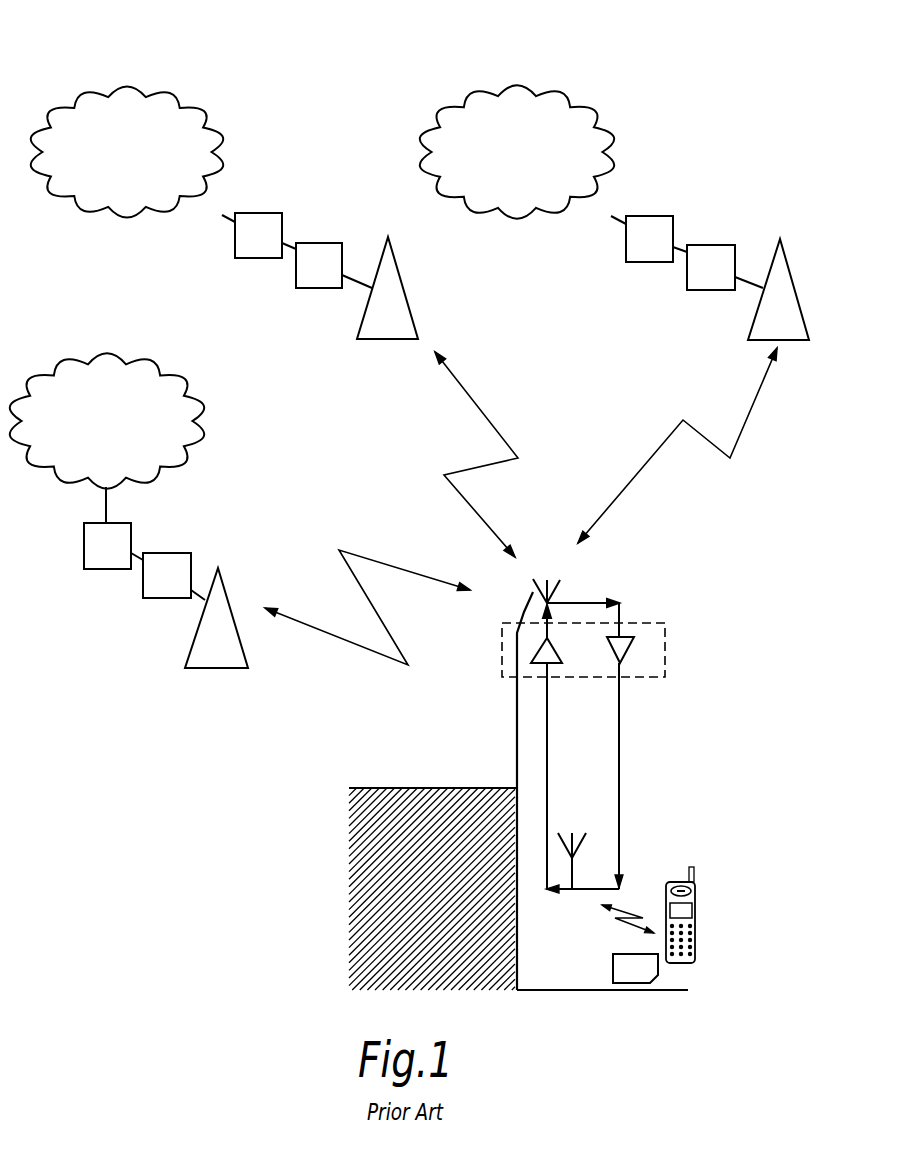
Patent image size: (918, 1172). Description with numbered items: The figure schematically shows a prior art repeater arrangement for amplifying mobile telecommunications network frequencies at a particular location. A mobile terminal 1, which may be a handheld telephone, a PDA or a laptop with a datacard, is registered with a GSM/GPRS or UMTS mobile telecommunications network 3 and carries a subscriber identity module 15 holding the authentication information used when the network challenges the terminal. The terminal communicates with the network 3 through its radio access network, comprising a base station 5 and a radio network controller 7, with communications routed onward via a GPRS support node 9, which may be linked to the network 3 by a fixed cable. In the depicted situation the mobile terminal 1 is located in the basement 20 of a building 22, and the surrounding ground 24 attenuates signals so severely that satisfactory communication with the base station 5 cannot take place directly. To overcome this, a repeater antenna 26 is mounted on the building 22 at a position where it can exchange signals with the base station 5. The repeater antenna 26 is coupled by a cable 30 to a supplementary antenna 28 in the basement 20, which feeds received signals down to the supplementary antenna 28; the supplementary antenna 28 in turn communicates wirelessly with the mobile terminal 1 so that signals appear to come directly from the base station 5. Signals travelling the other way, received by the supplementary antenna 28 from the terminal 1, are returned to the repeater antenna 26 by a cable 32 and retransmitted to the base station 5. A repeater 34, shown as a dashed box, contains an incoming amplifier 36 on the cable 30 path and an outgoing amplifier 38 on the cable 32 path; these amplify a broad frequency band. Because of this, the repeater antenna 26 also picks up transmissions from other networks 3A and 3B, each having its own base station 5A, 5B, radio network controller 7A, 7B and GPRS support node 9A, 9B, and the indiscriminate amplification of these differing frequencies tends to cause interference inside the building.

The mobile terminal 1 is at (697, 922).
The mobile telecommunications network 3 is at (190, 381).
The other mobile telecommunications network 3A is at (208, 117).
The other mobile telecommunications network 3B is at (597, 115).
The base station 5 is at (228, 596).
The base station 5A is at (405, 285).
The base station 5B is at (790, 265).
The radio network controller 7 is at (160, 552).
The radio network controller 7A is at (318, 243).
The radio network controller 7B is at (705, 245).
The GPRS support node 9 is at (115, 523).
The GPRS support node 9A is at (257, 213).
The GPRS support node 9B is at (643, 216).
The subscriber identity module 15 is at (625, 965).
The basement 20 is at (571, 932).
The building 22 is at (515, 703).
The ground 24 is at (373, 851).
The repeater antenna 26 is at (550, 600).
The supplementary antenna 28 is at (572, 870).
The cable 30 is at (622, 716).
The cable 32 is at (547, 716).
The repeater 34 is at (668, 650).
The incoming amplifier 36 is at (623, 638).
The outgoing amplifier 38 is at (530, 648).